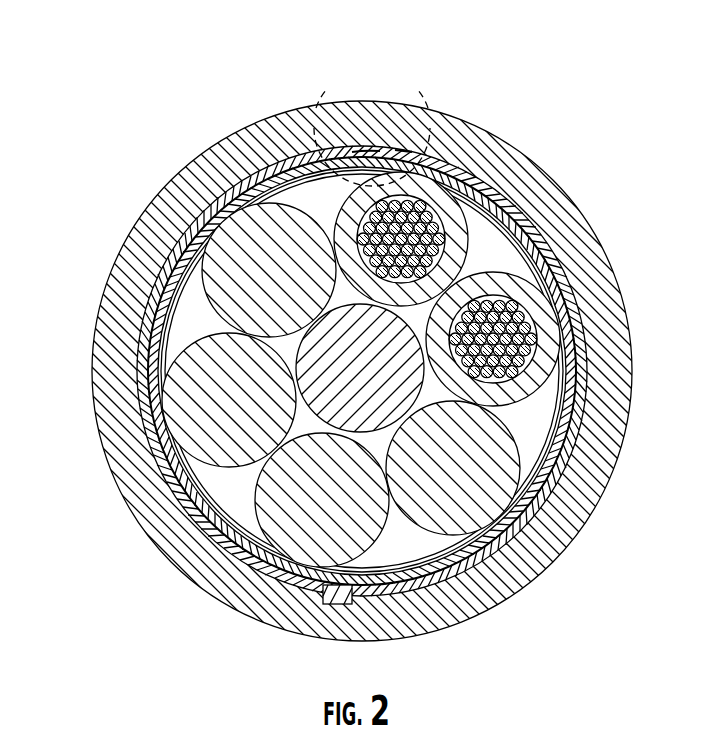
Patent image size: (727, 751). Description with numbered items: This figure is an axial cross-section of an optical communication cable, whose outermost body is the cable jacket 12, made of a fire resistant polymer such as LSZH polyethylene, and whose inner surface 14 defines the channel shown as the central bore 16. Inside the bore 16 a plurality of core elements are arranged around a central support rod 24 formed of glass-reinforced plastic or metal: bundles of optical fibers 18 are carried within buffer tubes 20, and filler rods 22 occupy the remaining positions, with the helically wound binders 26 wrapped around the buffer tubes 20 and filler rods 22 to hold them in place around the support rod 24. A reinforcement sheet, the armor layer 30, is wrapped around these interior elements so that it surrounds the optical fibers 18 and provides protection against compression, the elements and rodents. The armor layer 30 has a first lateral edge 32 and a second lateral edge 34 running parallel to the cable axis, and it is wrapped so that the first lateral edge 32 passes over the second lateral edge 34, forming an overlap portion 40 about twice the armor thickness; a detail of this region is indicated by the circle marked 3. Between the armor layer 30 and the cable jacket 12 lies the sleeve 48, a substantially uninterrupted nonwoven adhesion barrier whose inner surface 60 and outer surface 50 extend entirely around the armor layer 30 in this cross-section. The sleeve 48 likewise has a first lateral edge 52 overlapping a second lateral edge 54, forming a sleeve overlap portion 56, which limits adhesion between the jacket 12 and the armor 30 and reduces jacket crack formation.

The detail view indicator 3 is at (316, 102).
The cable jacket 12 is at (108, 403).
The inner surface 14 is at (216, 180).
The central bore 16 is at (428, 593).
The optical fibers 18 is at (415, 240).
The buffer tubes 20 is at (425, 185).
The filler rods 22 is at (218, 295).
The central support rod 24 is at (265, 560).
The helically wound binders 26 is at (543, 472).
The armor layer 30 is at (570, 418).
The first lateral edge 32 is at (357, 150).
The second lateral edge 34 is at (428, 138).
The overlap portion 40 is at (400, 150).
The sleeve 48 is at (575, 340).
The outer surface 50 is at (448, 617).
The first lateral edge 52 is at (413, 537).
The second lateral edge 54 is at (320, 606).
The sleeve overlap portion 56 is at (348, 607).
The inner surface 60 is at (327, 423).